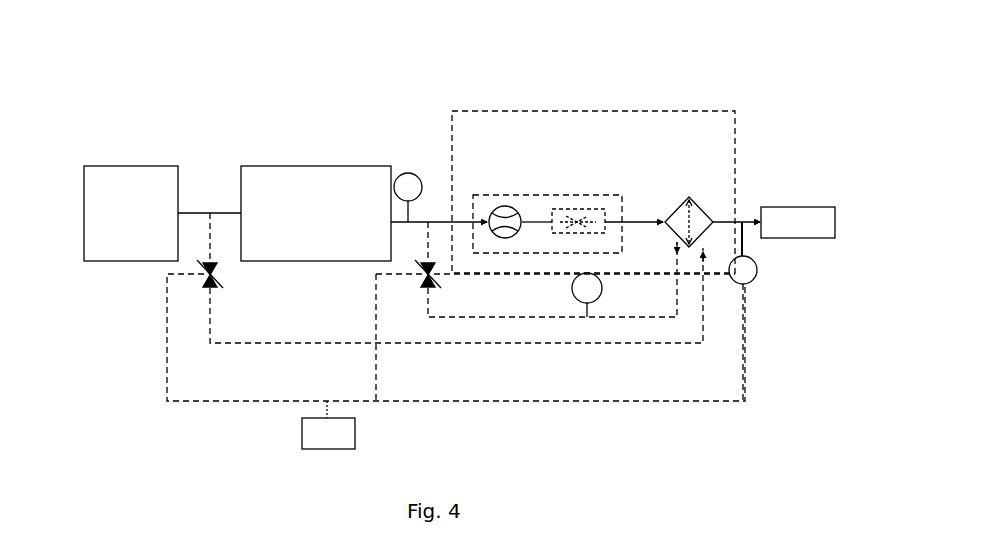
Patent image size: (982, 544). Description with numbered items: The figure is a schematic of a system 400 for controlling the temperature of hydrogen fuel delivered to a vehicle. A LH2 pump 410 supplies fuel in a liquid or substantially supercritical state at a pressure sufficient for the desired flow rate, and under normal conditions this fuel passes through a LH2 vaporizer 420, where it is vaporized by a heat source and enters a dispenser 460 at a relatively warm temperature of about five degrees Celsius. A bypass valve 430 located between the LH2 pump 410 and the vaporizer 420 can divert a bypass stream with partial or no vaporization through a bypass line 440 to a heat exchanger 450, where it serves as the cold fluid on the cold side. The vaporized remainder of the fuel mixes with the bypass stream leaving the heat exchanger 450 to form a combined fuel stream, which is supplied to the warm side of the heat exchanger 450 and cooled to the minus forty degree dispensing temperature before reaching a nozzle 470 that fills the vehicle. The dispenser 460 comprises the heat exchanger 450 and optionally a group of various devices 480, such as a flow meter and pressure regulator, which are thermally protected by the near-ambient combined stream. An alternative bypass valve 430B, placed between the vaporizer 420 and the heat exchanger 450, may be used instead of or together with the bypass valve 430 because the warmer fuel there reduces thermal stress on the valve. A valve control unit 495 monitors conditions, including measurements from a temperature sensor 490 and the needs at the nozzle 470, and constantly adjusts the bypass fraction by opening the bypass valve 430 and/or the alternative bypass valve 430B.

The system 400 is at (131, 46).
The LH2 pump 410 is at (131, 161).
The LH2 vaporizer 420 is at (316, 161).
The bypass valve 430 is at (196, 290).
The alternative bypass valve 430B is at (413, 288).
The bypass line 440 is at (309, 348).
The heat exchanger 450 is at (686, 171).
The dispenser 460 is at (581, 100).
The nozzle 470 is at (797, 202).
The group of various devices 480 is at (553, 191).
The temperature sensor 490 is at (757, 286).
The valve control unit 495 is at (290, 441).